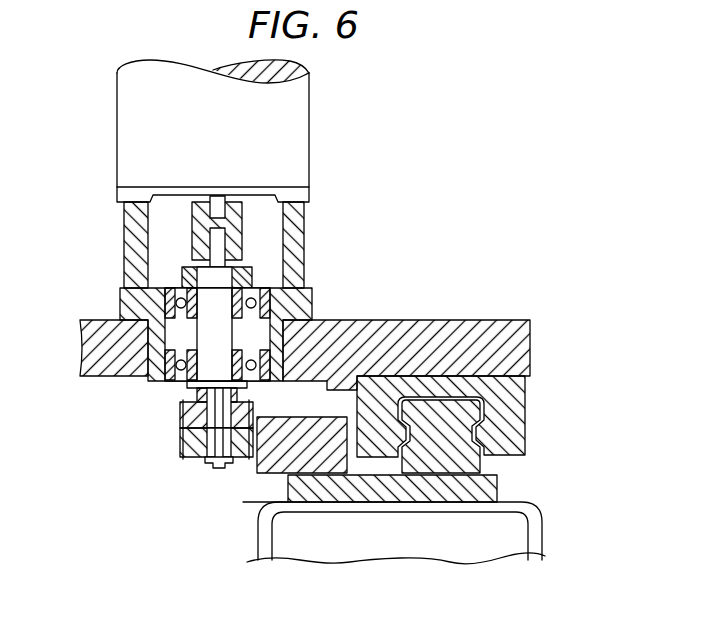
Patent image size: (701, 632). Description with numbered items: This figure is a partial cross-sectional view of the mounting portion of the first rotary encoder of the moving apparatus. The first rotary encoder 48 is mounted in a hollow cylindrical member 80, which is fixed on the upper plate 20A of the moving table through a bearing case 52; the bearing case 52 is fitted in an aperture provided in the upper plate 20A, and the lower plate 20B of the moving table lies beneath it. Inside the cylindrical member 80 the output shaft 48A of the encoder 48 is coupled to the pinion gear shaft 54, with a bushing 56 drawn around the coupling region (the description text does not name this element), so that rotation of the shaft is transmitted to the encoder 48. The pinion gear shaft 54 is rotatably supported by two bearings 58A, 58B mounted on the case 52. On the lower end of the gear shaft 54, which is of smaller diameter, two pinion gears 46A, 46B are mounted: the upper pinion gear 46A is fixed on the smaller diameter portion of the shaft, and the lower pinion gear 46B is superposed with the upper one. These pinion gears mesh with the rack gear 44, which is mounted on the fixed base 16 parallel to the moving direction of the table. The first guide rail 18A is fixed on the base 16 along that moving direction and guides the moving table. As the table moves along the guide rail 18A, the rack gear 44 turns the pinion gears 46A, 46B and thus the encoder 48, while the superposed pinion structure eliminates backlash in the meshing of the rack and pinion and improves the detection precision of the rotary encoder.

The fixed base 16 is at (553, 552).
The first guide rail 18A is at (475, 462).
The upper plate 20A is at (470, 325).
The lower plate 20B is at (500, 490).
The rack gear 44 is at (286, 424).
The upper pinion gear 46A is at (180, 416).
The lower pinion gear 46B is at (180, 446).
The first rotary encoder 48 is at (298, 118).
The output shaft 48A is at (217, 211).
The bearing case 52 is at (130, 303).
The pinion gear shaft 54 is at (205, 279).
The bushing 56 is at (199, 243).
The bearing 58A is at (265, 289).
The bearing 58B is at (178, 385).
The hollow cylindrical member 80 is at (132, 274).